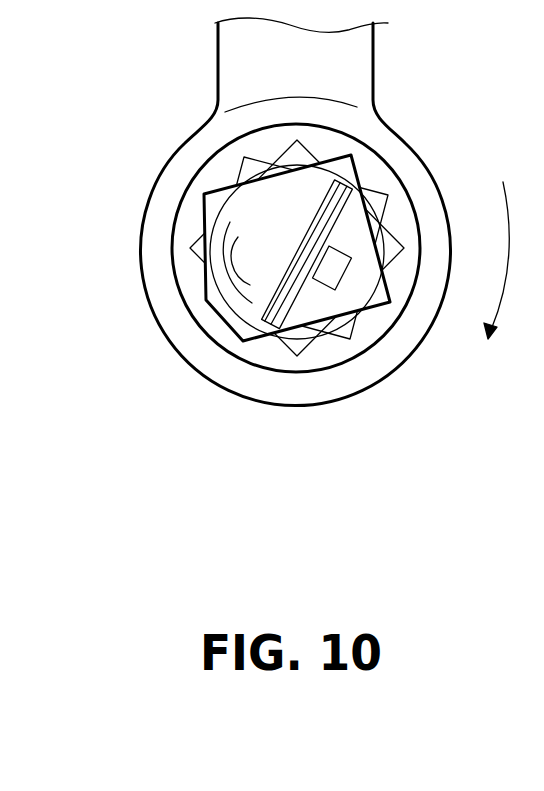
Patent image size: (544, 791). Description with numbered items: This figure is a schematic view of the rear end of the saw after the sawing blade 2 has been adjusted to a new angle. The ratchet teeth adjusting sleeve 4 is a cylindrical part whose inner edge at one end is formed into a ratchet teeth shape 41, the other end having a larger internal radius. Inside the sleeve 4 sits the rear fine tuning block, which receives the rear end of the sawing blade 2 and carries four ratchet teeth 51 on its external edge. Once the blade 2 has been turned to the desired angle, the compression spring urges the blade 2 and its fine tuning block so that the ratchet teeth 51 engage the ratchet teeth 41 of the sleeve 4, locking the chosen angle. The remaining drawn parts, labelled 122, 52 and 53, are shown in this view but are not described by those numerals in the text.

The outer ring of housing 122 is at (195, 168).
The ratchet teeth adjusting sleeve 4 is at (190, 213).
The ratchet teeth shape 41 is at (380, 190).
The sawing blade 2 is at (216, 314).
The ratchet teeth 51 is at (213, 255).
The outer arc groove 52 is at (222, 252).
The lug 53 is at (337, 274).